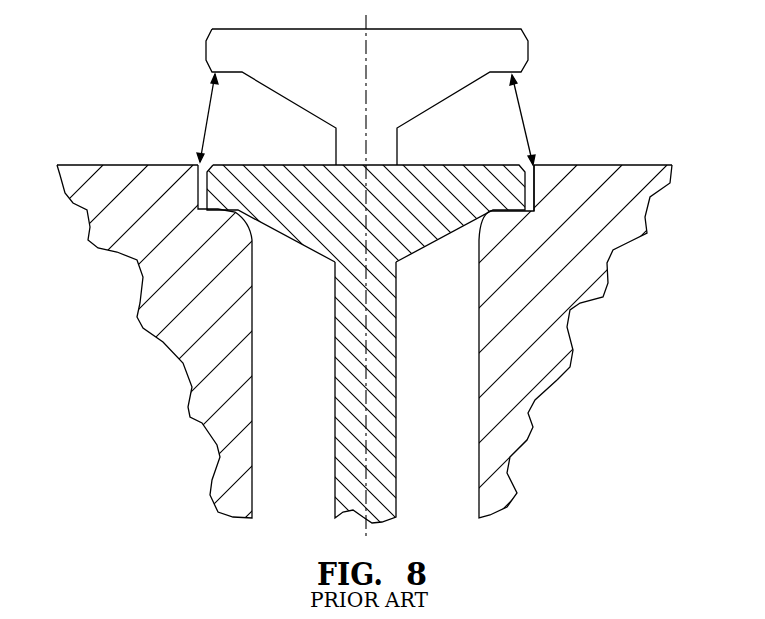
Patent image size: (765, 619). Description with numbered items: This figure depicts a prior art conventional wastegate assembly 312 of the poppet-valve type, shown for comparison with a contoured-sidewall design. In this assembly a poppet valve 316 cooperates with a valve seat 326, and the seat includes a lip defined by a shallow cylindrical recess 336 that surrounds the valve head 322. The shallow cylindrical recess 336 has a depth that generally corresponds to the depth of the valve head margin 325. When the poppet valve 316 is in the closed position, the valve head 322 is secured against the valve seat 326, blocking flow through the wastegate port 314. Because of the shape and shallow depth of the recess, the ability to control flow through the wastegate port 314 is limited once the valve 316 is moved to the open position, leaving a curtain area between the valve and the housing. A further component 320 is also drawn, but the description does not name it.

The conventional wastegate assembly 312 is at (233, 161).
The poppet valve 316 is at (500, 167).
The shallow cylindrical recess 336 is at (530, 165).
The valve head 322 is at (296, 204).
The valve head margin 325 is at (208, 186).
The valve seat 326 is at (482, 222).
The wastegate port 314 is at (570, 307).
The stem 320 is at (383, 415).